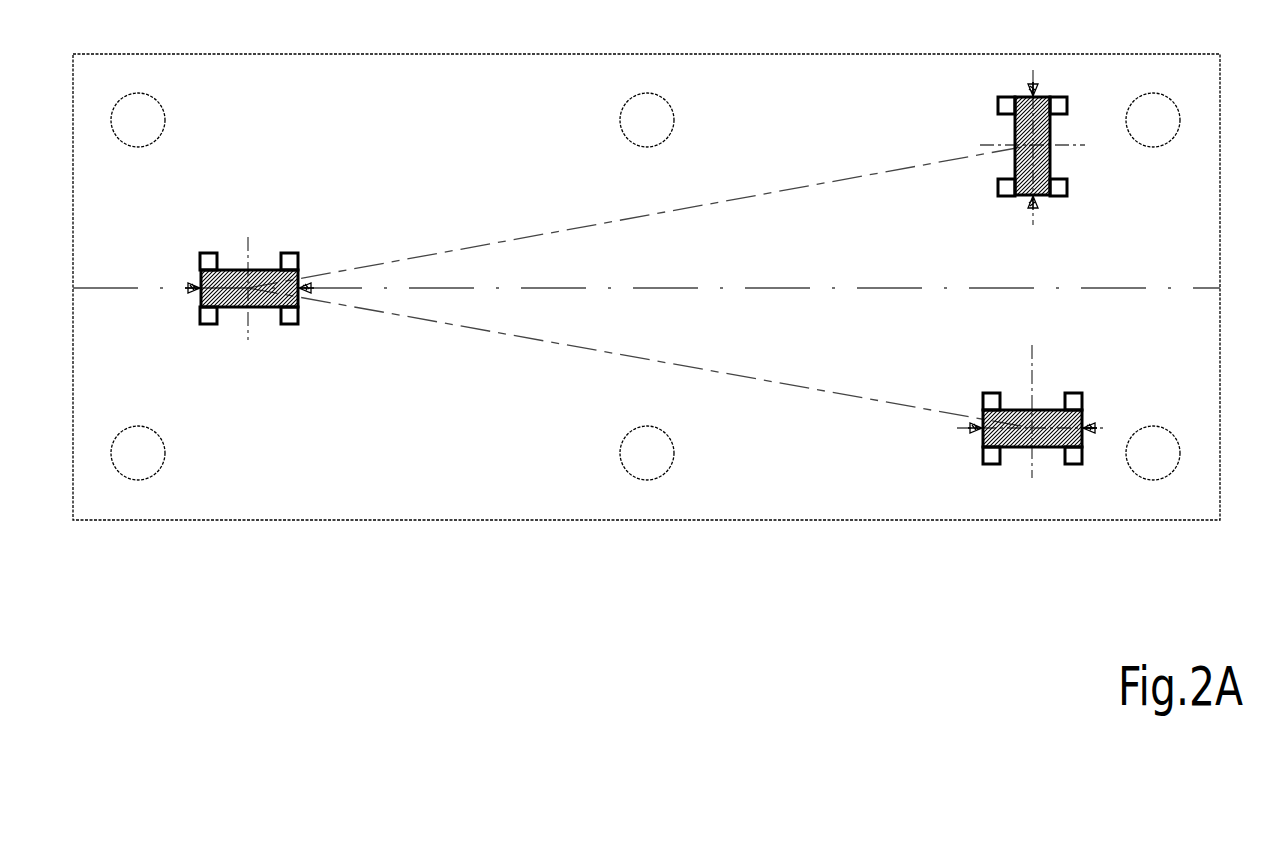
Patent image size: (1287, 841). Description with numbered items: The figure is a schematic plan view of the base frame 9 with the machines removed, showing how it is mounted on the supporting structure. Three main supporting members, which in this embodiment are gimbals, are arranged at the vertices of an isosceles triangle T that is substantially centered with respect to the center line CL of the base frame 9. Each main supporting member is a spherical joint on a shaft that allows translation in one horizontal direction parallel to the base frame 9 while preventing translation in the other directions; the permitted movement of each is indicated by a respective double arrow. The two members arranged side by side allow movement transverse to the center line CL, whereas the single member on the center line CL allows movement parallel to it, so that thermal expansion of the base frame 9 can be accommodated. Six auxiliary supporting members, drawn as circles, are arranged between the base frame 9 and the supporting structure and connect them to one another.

The base frame 9 is at (332, 521).
The isosceles triangle T is at (514, 238).
The center line CL is at (651, 286).